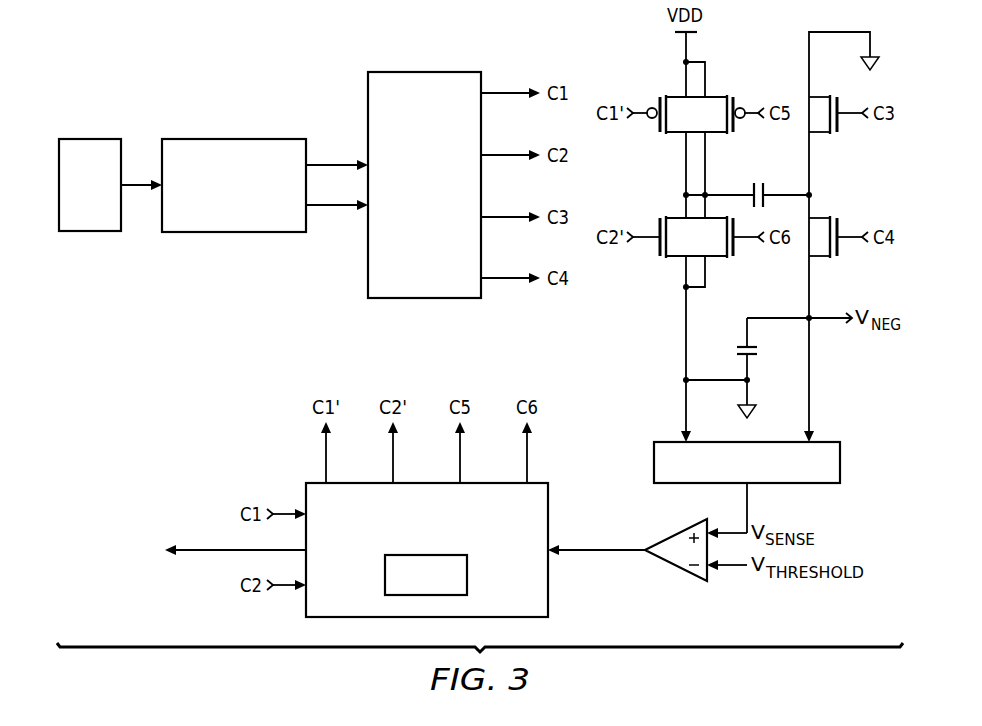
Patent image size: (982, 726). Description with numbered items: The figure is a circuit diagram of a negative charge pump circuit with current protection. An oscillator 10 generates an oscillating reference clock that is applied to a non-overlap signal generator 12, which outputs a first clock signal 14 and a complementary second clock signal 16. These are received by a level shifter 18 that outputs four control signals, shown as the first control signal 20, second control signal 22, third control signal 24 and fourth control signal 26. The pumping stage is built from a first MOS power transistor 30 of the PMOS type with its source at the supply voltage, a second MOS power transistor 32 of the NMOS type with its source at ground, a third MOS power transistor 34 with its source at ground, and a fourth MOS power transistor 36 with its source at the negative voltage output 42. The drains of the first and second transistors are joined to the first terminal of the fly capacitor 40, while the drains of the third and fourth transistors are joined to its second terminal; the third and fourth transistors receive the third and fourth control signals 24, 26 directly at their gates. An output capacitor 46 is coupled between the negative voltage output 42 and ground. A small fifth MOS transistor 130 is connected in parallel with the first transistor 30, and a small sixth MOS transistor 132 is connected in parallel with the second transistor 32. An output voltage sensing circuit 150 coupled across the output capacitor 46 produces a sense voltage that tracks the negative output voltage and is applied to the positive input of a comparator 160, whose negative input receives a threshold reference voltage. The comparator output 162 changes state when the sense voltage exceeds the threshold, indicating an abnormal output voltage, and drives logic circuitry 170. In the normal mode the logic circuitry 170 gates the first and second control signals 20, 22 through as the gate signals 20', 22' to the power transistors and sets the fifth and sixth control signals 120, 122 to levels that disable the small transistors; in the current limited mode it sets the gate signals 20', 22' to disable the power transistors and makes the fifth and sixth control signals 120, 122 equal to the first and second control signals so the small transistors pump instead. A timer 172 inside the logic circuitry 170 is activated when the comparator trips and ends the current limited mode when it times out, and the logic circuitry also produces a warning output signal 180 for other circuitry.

The oscillator 10 is at (78, 139).
The non-overlap signal generator 12 is at (222, 139).
The first clock signal 14 is at (337, 165).
The second clock signal 16 is at (339, 206).
The level shifter 18 is at (403, 72).
The first control signal 20 is at (510, 72).
The second control signal 22 is at (510, 133).
The third control signal 24 is at (502, 217).
The fourth control signal 26 is at (502, 278).
The first MOS power transistor 30 is at (673, 97).
The fifth MOS transistor 130 is at (723, 97).
The second MOS power transistor 32 is at (673, 257).
The sixth MOS transistor 132 is at (722, 257).
The third MOS power transistor 34 is at (825, 97).
The fourth MOS power transistor 36 is at (824, 220).
The first capacitor 40 is at (758, 183).
The negative voltage output 42 is at (812, 322).
The output capacitor 46 is at (759, 351).
The output voltage sensing circuit 150 is at (840, 465).
The comparator 160 is at (683, 572).
The comparator output 162 is at (612, 549).
The logic circuitry 170 is at (555, 590).
The timer 172 is at (385, 578).
The warning output signal 180 is at (206, 552).
The first control signal C1' 20' is at (303, 452).
The second control signal C2' 22' is at (372, 452).
The fifth control signal 120 is at (461, 478).
The sixth control signal 122 is at (528, 478).